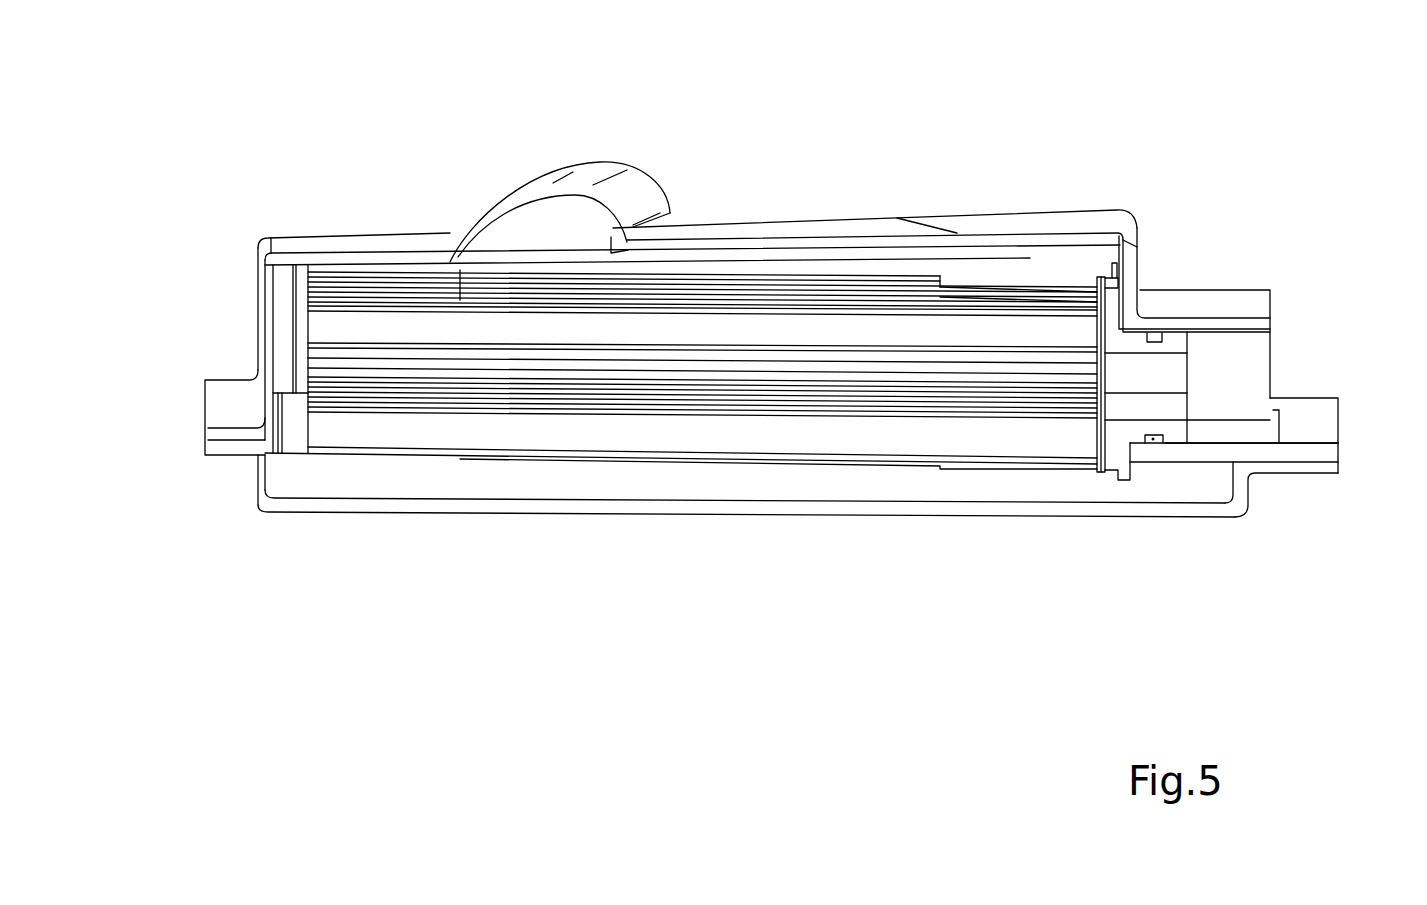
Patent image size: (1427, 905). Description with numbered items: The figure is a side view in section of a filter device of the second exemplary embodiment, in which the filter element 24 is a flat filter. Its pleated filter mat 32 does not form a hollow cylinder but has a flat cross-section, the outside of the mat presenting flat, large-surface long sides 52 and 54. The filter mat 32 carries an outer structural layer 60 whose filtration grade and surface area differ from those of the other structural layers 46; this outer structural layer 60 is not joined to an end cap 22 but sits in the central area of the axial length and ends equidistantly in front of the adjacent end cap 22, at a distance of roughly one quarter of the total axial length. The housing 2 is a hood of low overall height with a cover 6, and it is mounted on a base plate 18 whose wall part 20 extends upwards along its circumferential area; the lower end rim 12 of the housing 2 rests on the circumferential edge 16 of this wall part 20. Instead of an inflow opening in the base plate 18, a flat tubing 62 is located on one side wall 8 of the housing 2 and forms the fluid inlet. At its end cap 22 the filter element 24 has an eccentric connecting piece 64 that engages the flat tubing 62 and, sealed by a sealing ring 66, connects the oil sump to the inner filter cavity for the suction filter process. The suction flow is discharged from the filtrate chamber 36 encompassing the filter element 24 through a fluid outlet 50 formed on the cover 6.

The housing 2 is at (238, 203).
The cover 6 is at (388, 243).
The side wall 8 is at (265, 322).
The lower end rim 12 is at (1308, 452).
The circumferential edge 16 is at (1290, 468).
The base plate 18 is at (432, 508).
The wall part 20 is at (257, 478).
The end cap 22 is at (1093, 450).
The filter element 24 is at (355, 450).
The filter mat 32 is at (1027, 298).
The filtrate chamber 36 is at (1082, 262).
The structural layers 46 is at (991, 296).
The fluid outlet 50 is at (508, 220).
The long side 52 is at (953, 288).
The long side 54 is at (947, 462).
The outer structural layer 60 is at (778, 277).
The flat tubing 62 is at (1198, 327).
The connecting piece 64 is at (1175, 438).
The sealing ring 66 is at (1155, 440).